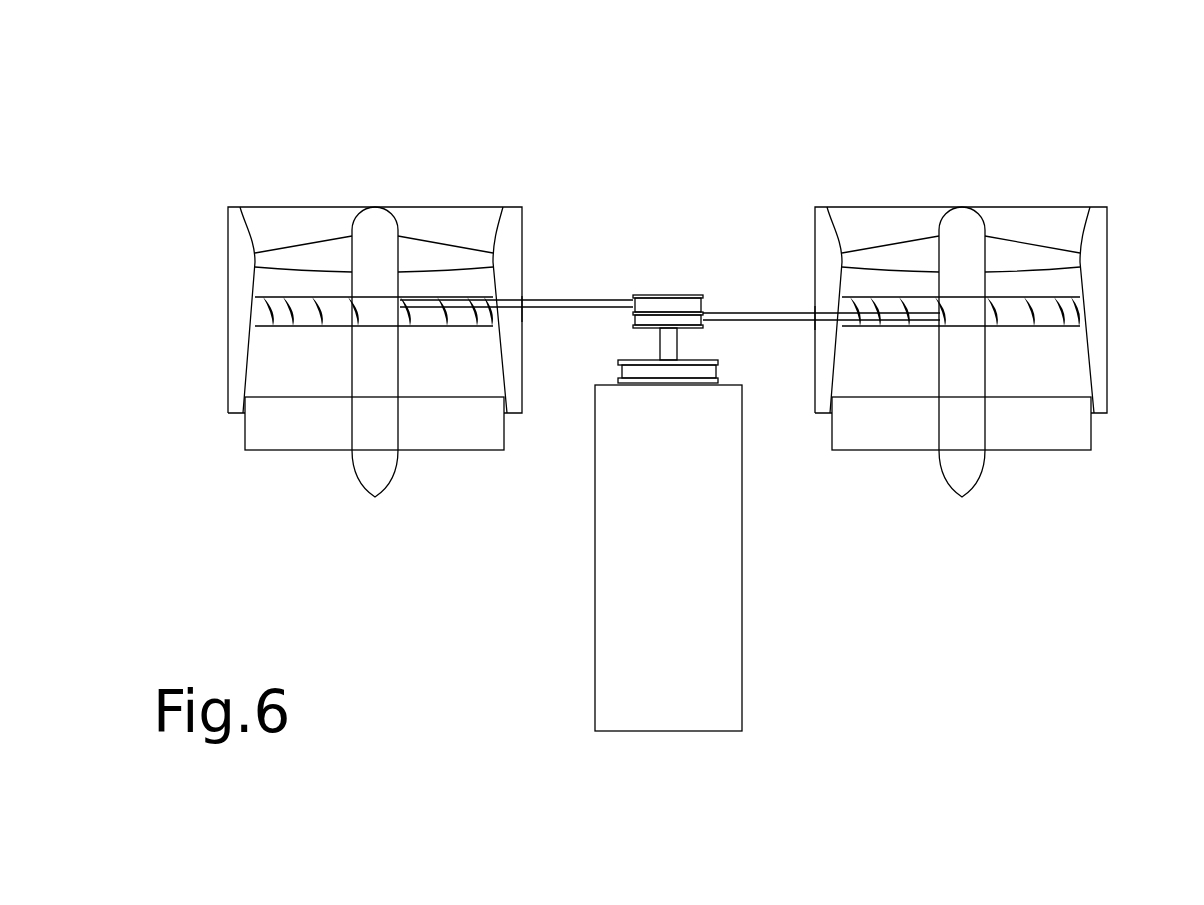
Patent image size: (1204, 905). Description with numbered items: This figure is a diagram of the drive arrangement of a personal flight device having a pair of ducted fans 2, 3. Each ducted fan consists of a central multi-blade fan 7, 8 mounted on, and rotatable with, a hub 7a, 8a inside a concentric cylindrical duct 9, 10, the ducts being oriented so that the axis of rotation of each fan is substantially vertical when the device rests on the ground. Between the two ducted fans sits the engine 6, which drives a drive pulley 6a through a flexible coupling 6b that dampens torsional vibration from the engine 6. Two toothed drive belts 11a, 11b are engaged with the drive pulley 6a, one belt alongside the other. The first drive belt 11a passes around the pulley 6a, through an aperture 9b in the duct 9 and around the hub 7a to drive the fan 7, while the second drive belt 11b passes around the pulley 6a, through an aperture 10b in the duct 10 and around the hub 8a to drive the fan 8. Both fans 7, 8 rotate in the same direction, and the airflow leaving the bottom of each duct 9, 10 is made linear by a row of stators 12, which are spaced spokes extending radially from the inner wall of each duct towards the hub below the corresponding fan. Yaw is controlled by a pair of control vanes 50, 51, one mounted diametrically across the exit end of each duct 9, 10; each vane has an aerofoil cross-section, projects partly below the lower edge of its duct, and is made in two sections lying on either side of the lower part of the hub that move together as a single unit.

The ducted fan 2 is at (365, 143).
The ducted fan 3 is at (970, 137).
The engine 6 is at (668, 558).
The drive pulley 6a is at (677, 292).
The flexible coupling 6b is at (677, 384).
The multi-blade fan 7 is at (288, 252).
The hub 7a is at (375, 352).
The multi-blade fan 8 is at (1043, 250).
The hub 8a is at (962, 352).
The duct 9 is at (497, 218).
The aperture 9b is at (524, 298).
The duct 10 is at (843, 228).
The aperture 10b is at (810, 313).
The first drive belt 11a is at (526, 313).
The second drive belt 11b is at (812, 328).
The stators 12 is at (258, 308).
The control vane 50 is at (318, 432).
The control vane 51 is at (893, 437).